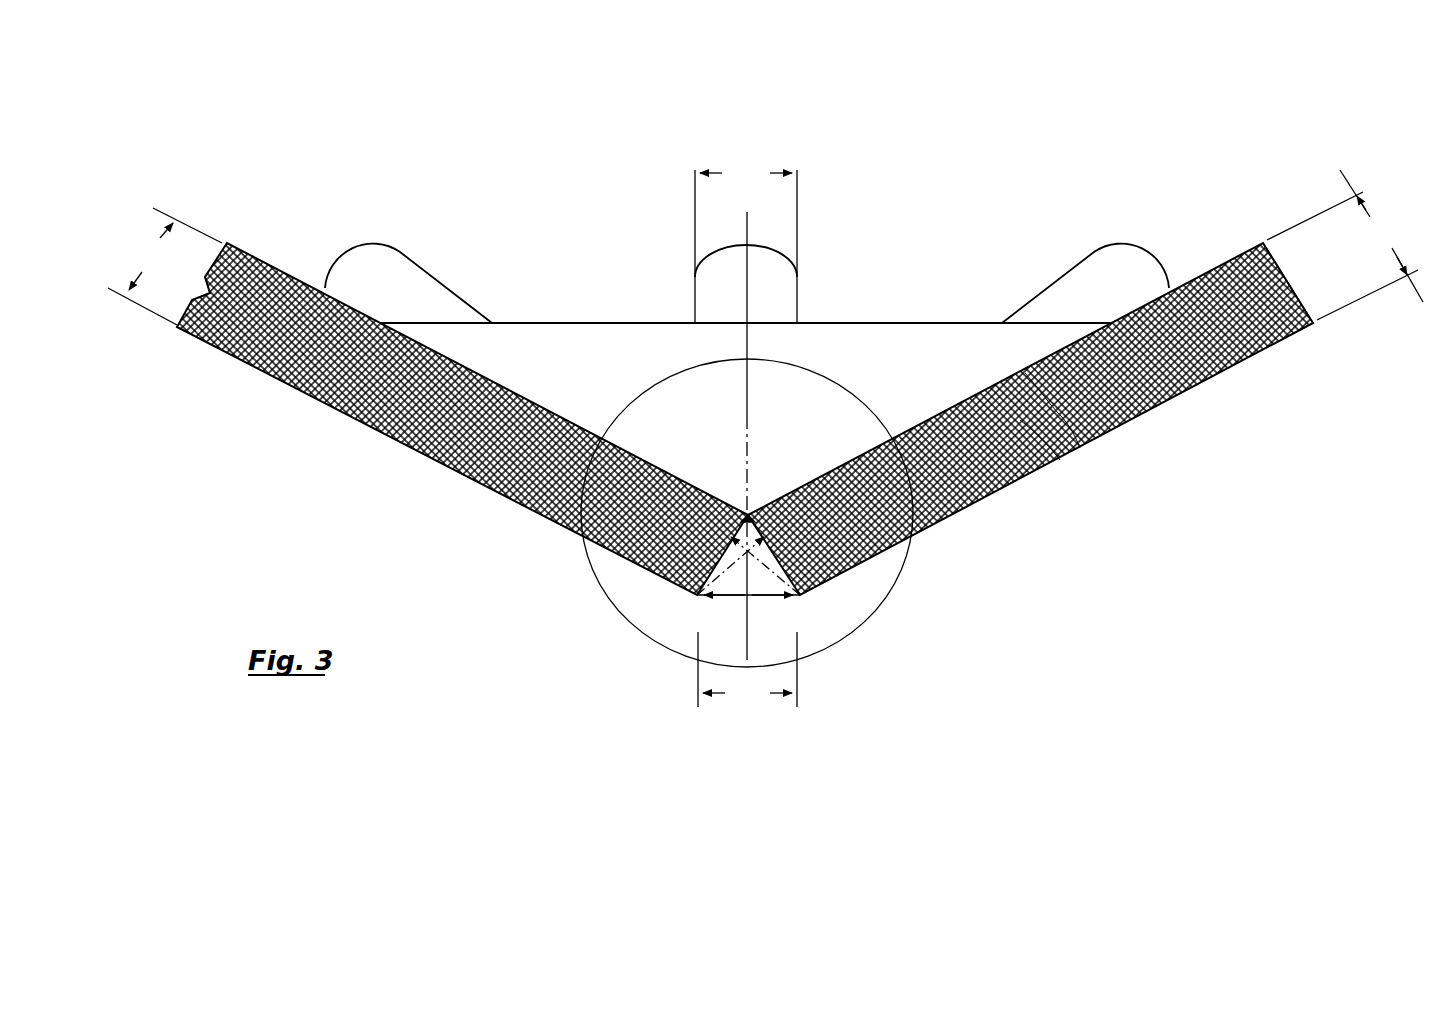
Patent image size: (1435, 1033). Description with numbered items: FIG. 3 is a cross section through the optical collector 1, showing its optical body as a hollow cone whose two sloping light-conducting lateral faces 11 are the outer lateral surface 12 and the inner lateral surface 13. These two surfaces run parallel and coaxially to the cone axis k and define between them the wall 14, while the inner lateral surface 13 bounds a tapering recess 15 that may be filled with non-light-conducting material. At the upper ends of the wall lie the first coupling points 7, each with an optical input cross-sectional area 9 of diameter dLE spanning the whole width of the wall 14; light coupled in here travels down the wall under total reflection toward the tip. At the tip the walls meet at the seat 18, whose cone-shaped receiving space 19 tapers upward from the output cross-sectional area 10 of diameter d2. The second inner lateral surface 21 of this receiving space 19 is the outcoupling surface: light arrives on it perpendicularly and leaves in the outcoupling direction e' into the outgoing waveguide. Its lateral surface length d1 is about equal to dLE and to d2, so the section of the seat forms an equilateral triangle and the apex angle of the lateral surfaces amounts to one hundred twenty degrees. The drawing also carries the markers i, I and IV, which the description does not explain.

The optical collector 1 is at (296, 80).
The first coupling points 7 is at (262, 248).
The optical input cross-sectional area 9 is at (1297, 263).
The output cross-sectional area 10 is at (767, 597).
The light-conducting lateral faces 11 is at (1077, 447).
The outer lateral surface 12 is at (426, 460).
The inner lateral surface 13 is at (880, 370).
The wall 14 is at (1177, 392).
The recess 15 is at (826, 330).
The seat 18 is at (726, 600).
The receiving space 19 is at (754, 516).
The second inner lateral surface 21 is at (741, 513).
The lateral surface length d1 is at (662, 576).
The output cross-sectional plane diameter d2 is at (747, 669).
The input cross-section diameter dLE is at (765, 245).
The outcoupling direction e' is at (750, 492).
The notch i is at (204, 291).
The end face I is at (1290, 281).
The cone axis k is at (738, 436).
The detail IV is at (897, 588).